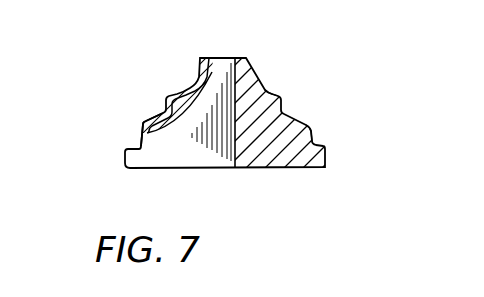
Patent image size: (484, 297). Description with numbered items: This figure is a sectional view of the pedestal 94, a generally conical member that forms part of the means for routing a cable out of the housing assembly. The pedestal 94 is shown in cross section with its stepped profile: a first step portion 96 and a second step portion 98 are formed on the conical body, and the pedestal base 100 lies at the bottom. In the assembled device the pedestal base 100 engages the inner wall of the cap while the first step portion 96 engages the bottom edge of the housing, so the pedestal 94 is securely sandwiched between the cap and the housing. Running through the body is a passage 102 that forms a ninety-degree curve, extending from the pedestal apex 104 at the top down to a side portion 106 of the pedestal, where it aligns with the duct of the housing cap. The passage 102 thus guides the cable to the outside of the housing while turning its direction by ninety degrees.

The pedestal 94 is at (283, 112).
The first step portion 96 is at (308, 126).
The second step portion 98 is at (268, 91).
The pedestal base 100 is at (328, 154).
The passage 102 is at (189, 144).
The pedestal apex 104 is at (211, 58).
The side portion 106 is at (141, 131).